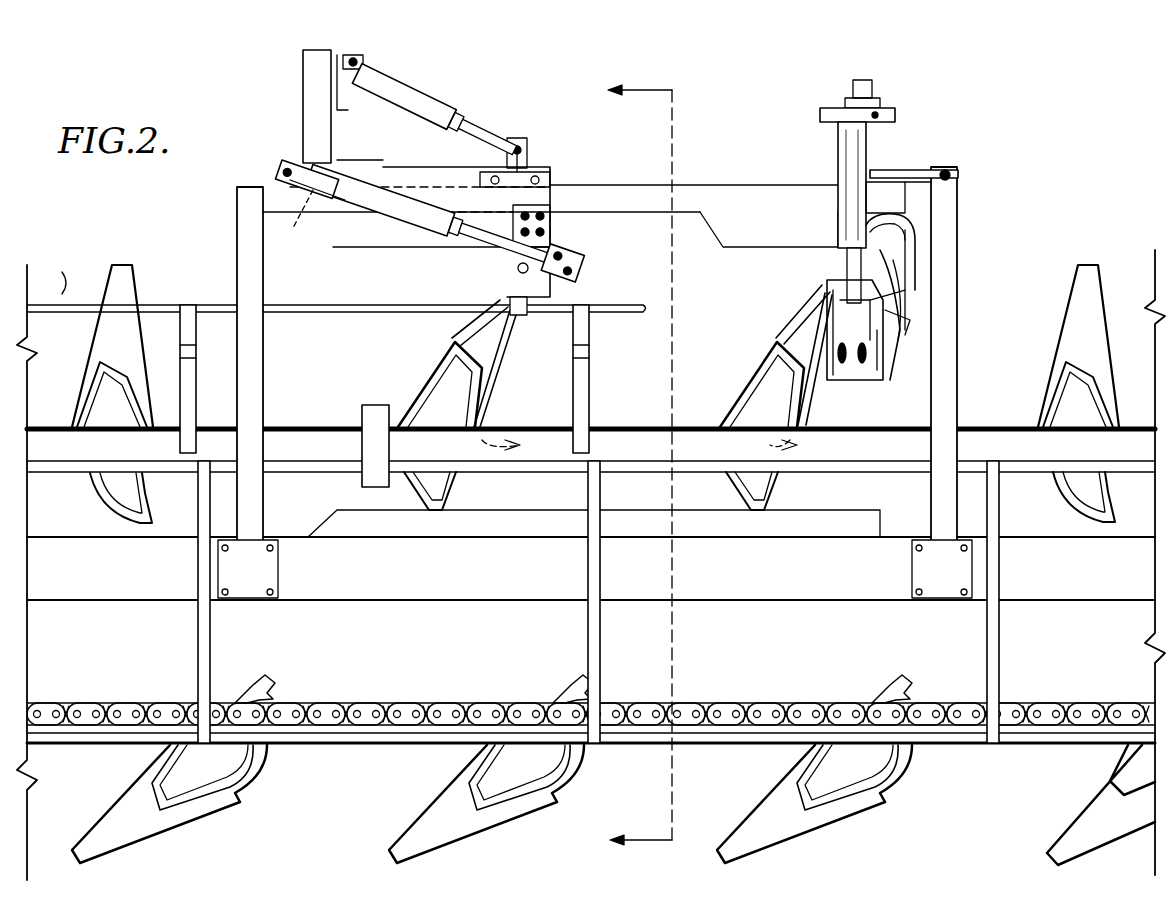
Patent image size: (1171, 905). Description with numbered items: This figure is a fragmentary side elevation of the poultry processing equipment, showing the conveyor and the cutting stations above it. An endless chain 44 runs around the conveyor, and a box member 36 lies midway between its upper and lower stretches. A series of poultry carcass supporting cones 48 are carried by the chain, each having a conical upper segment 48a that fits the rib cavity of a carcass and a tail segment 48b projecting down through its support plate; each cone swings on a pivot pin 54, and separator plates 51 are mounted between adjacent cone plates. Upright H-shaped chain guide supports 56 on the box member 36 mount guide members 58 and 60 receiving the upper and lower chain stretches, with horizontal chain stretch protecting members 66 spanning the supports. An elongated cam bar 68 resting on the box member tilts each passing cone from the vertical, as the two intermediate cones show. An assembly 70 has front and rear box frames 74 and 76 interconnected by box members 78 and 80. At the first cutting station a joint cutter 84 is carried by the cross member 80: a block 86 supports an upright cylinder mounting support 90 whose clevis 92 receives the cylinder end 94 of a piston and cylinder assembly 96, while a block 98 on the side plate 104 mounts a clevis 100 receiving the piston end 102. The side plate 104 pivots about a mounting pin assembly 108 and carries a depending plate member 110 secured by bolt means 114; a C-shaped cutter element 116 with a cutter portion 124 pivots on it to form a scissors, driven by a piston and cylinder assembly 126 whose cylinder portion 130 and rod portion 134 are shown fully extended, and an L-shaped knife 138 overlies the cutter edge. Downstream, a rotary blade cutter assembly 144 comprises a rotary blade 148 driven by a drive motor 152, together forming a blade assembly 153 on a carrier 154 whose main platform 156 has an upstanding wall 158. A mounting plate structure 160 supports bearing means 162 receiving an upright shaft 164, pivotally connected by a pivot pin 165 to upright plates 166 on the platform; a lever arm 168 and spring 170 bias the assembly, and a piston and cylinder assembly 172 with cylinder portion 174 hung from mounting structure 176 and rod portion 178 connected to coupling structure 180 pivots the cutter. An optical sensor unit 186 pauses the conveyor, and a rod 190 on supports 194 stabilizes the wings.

The box member 36 is at (712, 573).
The endless chain 44 is at (407, 705).
The poultry carcass supporting cone 48 is at (437, 338).
The upper segment 48a is at (497, 367).
The tail segment 48b is at (442, 497).
The separator plate 51 is at (676, 404).
The pivot pin 54 is at (639, 444).
The H-shaped chain guide support 56 is at (198, 694).
The chain engaging guide member 58 is at (308, 470).
The chain engaging guide member 60 is at (378, 742).
The chain stretch protecting member 66 is at (282, 440).
The cam bar 68 is at (565, 525).
The assembly 70 is at (690, 133).
The front box frame 74 is at (237, 250).
The rear box frame 76 is at (960, 220).
The box member 78 is at (722, 205).
The box member 80 is at (603, 192).
The joint cutter 84 is at (262, 128).
The block 86 is at (360, 157).
The cylinder mounting support 90 is at (312, 90).
The clevis 92 is at (353, 60).
The cylinder end 94 is at (380, 72).
The piston and cylinder assembly 96 is at (430, 80).
The block 98 is at (530, 150).
The clevis 100 is at (526, 165).
The piston end 102 is at (482, 118).
The side plate 104 is at (400, 176).
The mounting pin assembly 108 is at (304, 214).
The plate member 110 is at (522, 303).
The bolt means 114 is at (558, 190).
The cutter element 116 is at (575, 280).
The C-shaped cutter portion 124 is at (505, 256).
The piston and cylinder assembly 126 is at (345, 248).
The cylinder portion 130 is at (410, 190).
The rod portion 134 is at (478, 215).
The L-shaped transverse shoulder cut knife 138 is at (518, 270).
The rotary blade cutter assembly 144 is at (922, 118).
The rotary blade 148 is at (915, 228).
The drive motor 152 is at (902, 294).
The blade assembly 153 is at (925, 247).
The carrier 154 is at (915, 330).
The main platform 156 is at (875, 385).
The upstanding wall 158 is at (912, 262).
The mounting plate structure 160 is at (823, 220).
The bearing means 162 is at (876, 175).
The upright shaft 164 is at (860, 82).
The pivot pin 165 is at (915, 320).
The upright plate 166 is at (895, 345).
The lever arm 168 is at (925, 170).
The spring 170 is at (960, 172).
The piston and cylinder assembly 172 is at (832, 150).
The cylinder portion 174 is at (852, 178).
The mounting structure 176 is at (892, 113).
The rod portion 178 is at (850, 283).
The coupling structure 180 is at (842, 385).
The optical beam and sensor unit 186 is at (375, 420).
The rod 190 is at (51, 565).
The support 194 is at (188, 340).